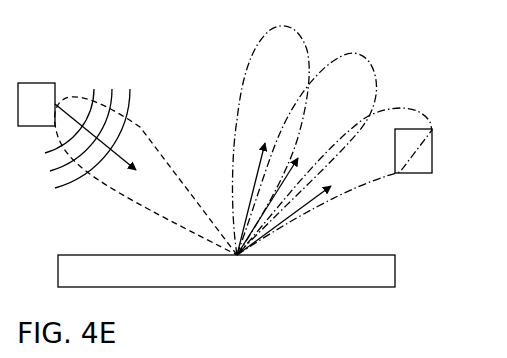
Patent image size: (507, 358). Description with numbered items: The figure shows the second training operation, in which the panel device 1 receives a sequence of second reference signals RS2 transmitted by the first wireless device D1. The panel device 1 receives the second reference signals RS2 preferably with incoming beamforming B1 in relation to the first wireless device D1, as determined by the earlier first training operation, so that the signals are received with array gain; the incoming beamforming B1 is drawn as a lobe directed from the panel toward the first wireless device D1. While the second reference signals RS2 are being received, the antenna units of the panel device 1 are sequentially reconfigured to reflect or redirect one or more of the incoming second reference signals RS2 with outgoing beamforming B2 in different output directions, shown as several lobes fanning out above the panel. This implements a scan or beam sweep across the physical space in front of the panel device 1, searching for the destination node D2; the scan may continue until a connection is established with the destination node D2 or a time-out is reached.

The panel device 1 is at (234, 282).
The first wireless device D1 is at (52, 116).
The destination node D2 is at (428, 162).
The incoming beamforming B1 is at (140, 127).
The outgoing beamforming B2 is at (252, 52).
The second reference signals RS2 is at (217, 179).